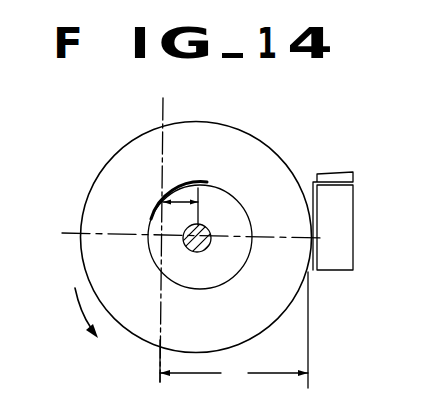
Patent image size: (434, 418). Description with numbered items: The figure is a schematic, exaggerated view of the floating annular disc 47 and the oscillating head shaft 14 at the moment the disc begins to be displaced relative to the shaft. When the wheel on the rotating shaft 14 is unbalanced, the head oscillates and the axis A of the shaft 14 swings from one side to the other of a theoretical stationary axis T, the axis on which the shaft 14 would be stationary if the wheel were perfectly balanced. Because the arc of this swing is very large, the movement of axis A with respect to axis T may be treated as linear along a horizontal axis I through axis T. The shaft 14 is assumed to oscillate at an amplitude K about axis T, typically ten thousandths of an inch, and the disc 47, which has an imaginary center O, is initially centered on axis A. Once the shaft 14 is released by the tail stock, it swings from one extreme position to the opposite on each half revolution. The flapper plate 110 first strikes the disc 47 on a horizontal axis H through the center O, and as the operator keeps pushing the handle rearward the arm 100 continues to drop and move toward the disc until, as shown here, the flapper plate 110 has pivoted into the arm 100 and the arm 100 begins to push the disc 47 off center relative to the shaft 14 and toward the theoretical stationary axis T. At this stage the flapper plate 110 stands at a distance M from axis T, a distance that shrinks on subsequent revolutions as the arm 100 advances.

The annular disc 47 is at (253, 133).
The flapper plate 110 is at (313, 179).
The arm 100 is at (356, 186).
The head shaft 14 is at (208, 250).
The amplitude of oscillation K is at (184, 190).
The distance from theoretical axis M is at (234, 330).
The horizontal axis H is at (70, 230).
The theoretical stationary axis T is at (152, 226).
The horizontal axis I is at (120, 236).
The axis of shaft A is at (208, 231).
The imaginary center of disc O is at (184, 267).